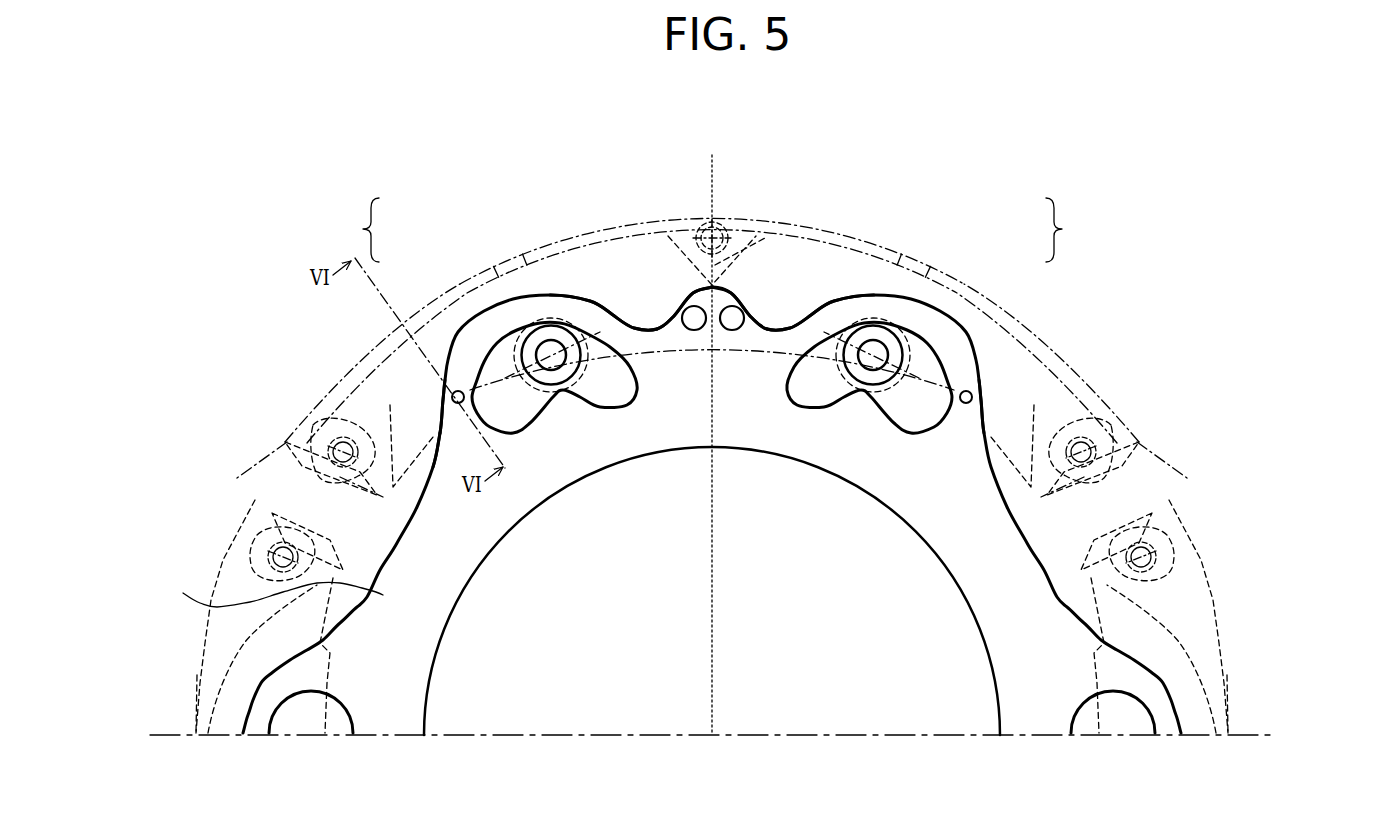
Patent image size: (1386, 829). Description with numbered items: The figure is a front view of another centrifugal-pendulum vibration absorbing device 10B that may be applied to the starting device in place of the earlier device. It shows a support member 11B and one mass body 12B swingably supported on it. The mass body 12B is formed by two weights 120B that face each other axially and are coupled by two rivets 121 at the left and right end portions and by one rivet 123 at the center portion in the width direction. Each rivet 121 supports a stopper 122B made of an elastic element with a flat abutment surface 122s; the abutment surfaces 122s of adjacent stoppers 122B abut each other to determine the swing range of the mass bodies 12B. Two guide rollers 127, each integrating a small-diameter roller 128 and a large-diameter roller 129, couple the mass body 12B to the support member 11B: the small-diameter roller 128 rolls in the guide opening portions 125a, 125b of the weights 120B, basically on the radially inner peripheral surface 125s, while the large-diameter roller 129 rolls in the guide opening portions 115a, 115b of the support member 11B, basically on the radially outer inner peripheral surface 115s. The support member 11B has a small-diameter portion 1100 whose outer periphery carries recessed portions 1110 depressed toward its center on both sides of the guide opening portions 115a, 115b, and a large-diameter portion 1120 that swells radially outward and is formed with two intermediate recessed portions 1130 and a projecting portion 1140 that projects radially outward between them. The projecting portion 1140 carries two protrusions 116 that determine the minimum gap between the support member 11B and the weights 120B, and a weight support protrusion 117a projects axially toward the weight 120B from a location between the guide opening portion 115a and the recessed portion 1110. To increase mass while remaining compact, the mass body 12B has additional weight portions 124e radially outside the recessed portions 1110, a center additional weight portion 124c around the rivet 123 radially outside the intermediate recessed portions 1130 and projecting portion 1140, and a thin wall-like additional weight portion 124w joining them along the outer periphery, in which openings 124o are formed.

The centrifugal-pendulum vibration absorbing device 10B is at (280, 303).
The support member 11B is at (942, 538).
The mass body 12B is at (218, 578).
The protrusions 116 is at (722, 327).
The guide opening portion 115a is at (594, 349).
The guide opening portion 115b is at (826, 345).
The inner peripheral surface 115s is at (960, 380).
The weight support protrusion 117a is at (441, 441).
The weight 120B is at (196, 697).
The rivet 121 is at (315, 428).
The stopper 122B is at (262, 515).
The flat abutment surface 122s is at (310, 455).
The rivet 123 is at (724, 237).
The center additional weight portion 124c is at (760, 257).
The additional weight portion 124e is at (360, 407).
The opening 124o is at (500, 263).
The wall-like additional weight portion 124w is at (573, 240).
The guide opening portion 125a is at (562, 313).
The guide opening portion 125b is at (867, 330).
The inner peripheral surface 125s is at (285, 442).
The guide roller 127 is at (715, 230).
The small-diameter roller 128 is at (530, 347).
The large-diameter roller 129 is at (533, 345).
The small-diameter portion 1100 is at (217, 607).
The recessed portion 1110 is at (395, 547).
The large-diameter portion 1120 is at (413, 478).
The intermediate recessed portion 1130 is at (661, 314).
The projecting portion 1140 is at (690, 292).